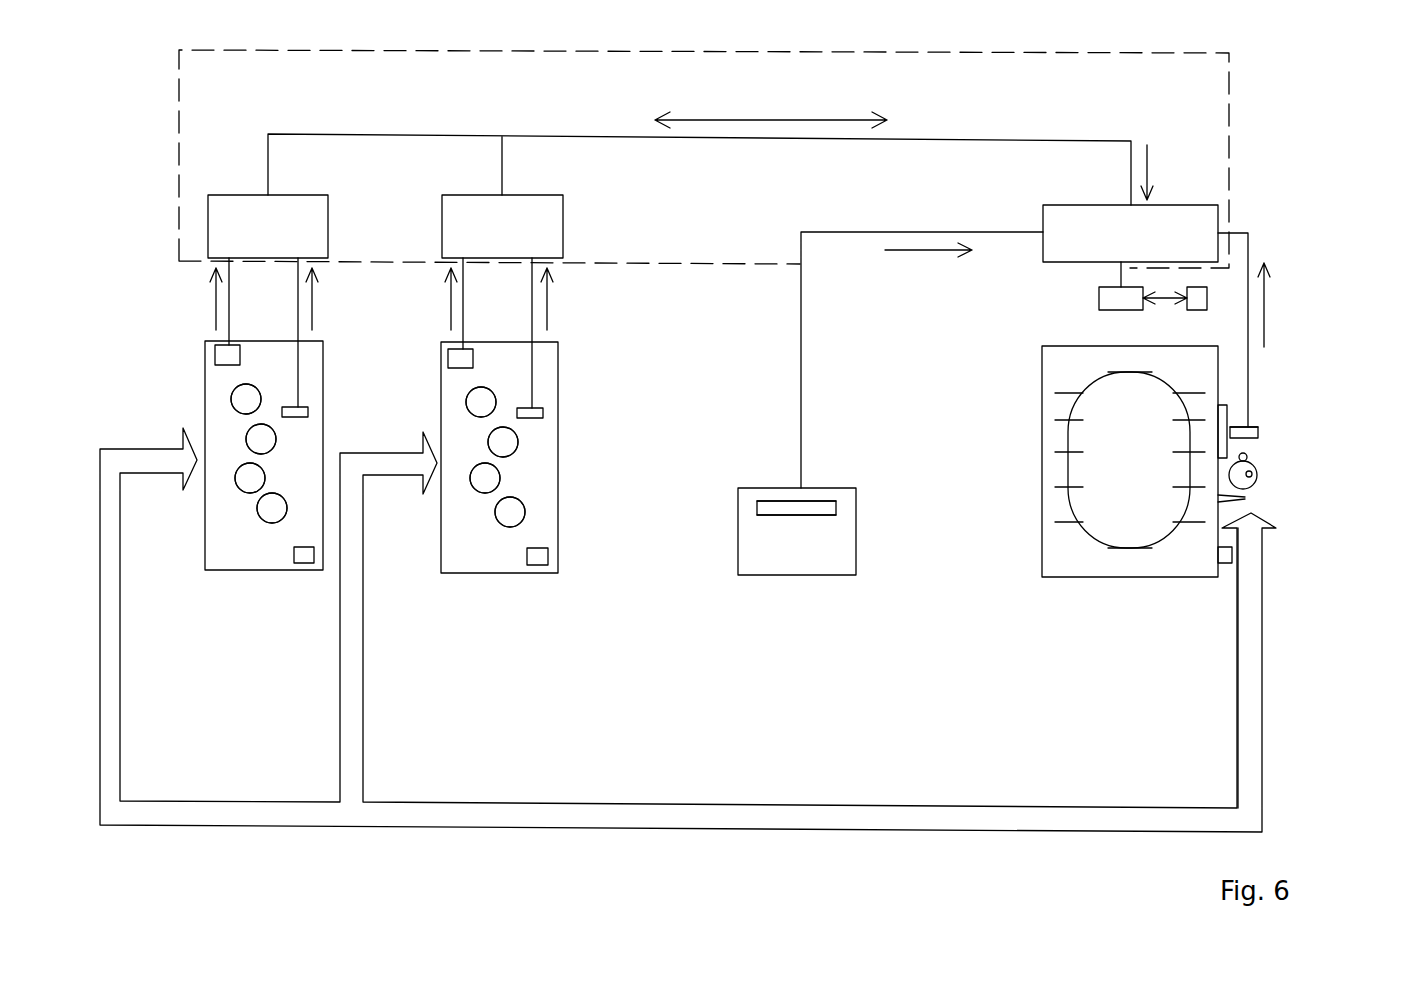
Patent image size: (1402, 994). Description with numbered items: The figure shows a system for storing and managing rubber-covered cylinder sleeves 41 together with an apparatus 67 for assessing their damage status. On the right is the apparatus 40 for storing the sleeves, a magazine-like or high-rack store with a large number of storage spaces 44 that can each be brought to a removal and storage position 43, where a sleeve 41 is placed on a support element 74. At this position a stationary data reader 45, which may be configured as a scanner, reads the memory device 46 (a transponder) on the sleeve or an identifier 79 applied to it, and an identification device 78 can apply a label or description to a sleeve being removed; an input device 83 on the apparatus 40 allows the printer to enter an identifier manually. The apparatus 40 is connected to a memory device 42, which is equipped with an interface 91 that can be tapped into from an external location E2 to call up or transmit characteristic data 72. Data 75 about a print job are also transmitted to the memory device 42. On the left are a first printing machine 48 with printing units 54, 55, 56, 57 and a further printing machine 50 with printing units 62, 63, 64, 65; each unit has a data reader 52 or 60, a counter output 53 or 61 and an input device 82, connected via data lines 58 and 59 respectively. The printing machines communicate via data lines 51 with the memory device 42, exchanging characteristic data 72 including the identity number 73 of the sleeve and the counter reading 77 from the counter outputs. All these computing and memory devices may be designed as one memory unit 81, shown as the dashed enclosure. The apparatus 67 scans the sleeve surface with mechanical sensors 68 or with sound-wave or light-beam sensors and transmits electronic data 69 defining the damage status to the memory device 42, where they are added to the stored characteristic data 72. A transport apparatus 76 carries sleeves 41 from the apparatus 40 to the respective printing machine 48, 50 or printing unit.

The apparatus for storing rubber-covered cylinder sleeves 40 is at (1119, 638).
The rubber-covered cylinder sleeve 41 is at (1247, 498).
The memory device 42 is at (1194, 228).
The removal and storage position 43 is at (1278, 485).
The storage space 44 is at (1130, 548).
The data reader 45 is at (1258, 432).
The memory device on the rubber-covered cylinder sleeve 46 is at (1247, 455).
The first printing machine 48 is at (496, 597).
The further printing machine 50 is at (255, 594).
The data lines 51 is at (1022, 138).
The data reader 52 is at (543, 412).
The counter output 53 is at (448, 357).
The printing unit 54 is at (481, 402).
The printing unit 55 is at (503, 442).
The printing unit 56 is at (485, 478).
The printing unit 57 is at (510, 512).
The data lines 58 is at (532, 298).
The data lines 59 is at (298, 300).
The data reader 60 is at (308, 412).
The counter output 61 is at (215, 355).
The printing unit 62 is at (246, 399).
The printing unit 63 is at (261, 439).
The printing unit 64 is at (250, 478).
The printing unit 65 is at (272, 508).
The apparatus for assessing and registering the damage status 67 is at (800, 575).
The mechanical sensor 68 is at (830, 510).
The electronic data 69 is at (915, 255).
The characteristic data 72 is at (790, 118).
The identity number 73 is at (1264, 300).
The support element 74 is at (1252, 507).
The data about a print job 75 is at (1155, 160).
The transport apparatus 76 is at (948, 818).
The counter reading 77 is at (216, 295).
The identification device 78 is at (1227, 430).
The identifier 79 is at (1257, 474).
The memory unit 81 is at (1229, 53).
The input device 82 is at (300, 557).
The input device 83 is at (1232, 558).
The interface 91 is at (1099, 298).
The external location E2 is at (1248, 275).